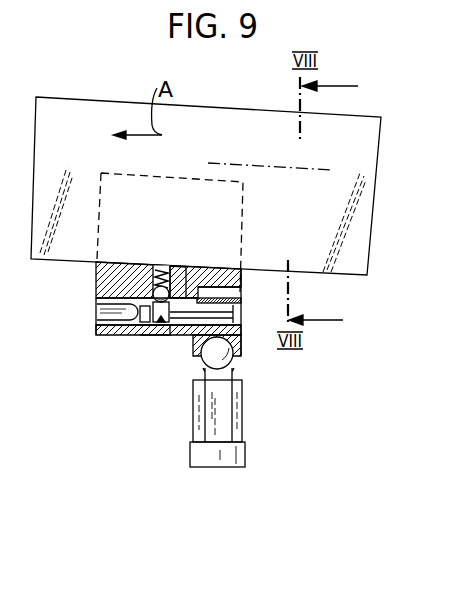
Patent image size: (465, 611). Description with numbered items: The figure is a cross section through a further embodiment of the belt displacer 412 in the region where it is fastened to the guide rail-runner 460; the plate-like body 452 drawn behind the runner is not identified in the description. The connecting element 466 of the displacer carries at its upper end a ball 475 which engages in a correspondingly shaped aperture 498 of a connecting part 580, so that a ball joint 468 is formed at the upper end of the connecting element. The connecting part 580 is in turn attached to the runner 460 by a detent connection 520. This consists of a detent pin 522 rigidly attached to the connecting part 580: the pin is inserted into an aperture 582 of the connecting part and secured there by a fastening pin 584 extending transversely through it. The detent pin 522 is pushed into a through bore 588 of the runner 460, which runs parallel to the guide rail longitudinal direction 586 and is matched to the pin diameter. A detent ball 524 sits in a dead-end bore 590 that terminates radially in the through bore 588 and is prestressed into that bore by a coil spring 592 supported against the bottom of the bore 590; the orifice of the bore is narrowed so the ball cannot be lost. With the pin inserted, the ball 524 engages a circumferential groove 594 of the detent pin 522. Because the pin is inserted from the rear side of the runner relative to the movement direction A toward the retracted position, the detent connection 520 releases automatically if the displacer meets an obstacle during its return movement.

The belt displacer 412 is at (192, 418).
The plate 452 is at (345, 263).
The guide rail-runner 460 is at (108, 284).
The connecting element 466 is at (242, 430).
The ball joint 468 is at (233, 370).
The ball 475 is at (205, 370).
The aperture 498 is at (245, 352).
The detent connection 520 is at (130, 337).
The detent pin 522 is at (189, 323).
The detent ball 524 is at (146, 287).
The connecting part 580 is at (236, 301).
The aperture 582 is at (210, 266).
The fastening pin 584 is at (244, 266).
The guide rail longitudinal direction 586 is at (237, 164).
The through bore 588 is at (105, 319).
The dead-end bore 590 is at (178, 270).
The coil spring 592 is at (160, 270).
The circumferential groove 594 is at (152, 337).